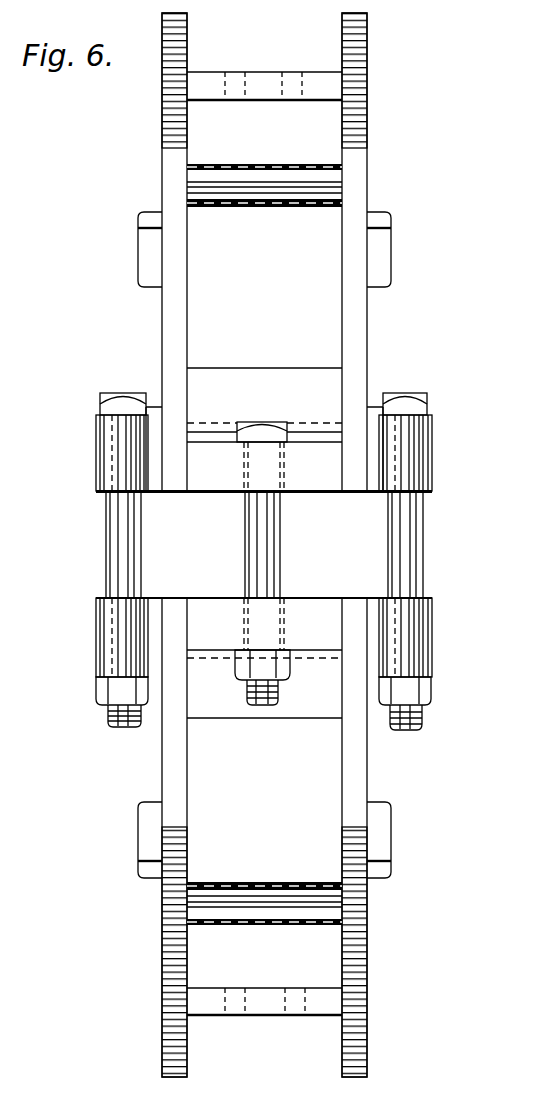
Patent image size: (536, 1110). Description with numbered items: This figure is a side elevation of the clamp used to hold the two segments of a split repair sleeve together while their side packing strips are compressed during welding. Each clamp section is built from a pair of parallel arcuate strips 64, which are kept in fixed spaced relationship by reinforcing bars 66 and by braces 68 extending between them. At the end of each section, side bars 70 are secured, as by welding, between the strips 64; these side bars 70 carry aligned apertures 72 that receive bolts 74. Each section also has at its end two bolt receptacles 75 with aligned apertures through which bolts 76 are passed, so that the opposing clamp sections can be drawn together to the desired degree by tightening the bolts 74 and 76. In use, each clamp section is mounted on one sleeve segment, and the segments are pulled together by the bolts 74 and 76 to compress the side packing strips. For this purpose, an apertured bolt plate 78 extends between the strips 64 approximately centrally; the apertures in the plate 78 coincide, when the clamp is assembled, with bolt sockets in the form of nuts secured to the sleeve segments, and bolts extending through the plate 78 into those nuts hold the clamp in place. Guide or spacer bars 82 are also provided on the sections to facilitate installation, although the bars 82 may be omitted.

The arcuate strips 64 is at (162, 1030).
The reinforcing bars 66 is at (245, 168).
The braces 68 is at (208, 382).
The side bars 70 is at (300, 452).
The aligned apertures 72 is at (284, 602).
The bolts 74 is at (257, 428).
The bolt receptacles 75 is at (104, 450).
The bolts 76 is at (112, 406).
The apertured bolt plate 78 is at (311, 86).
The guide or spacer bars 82 is at (145, 255).